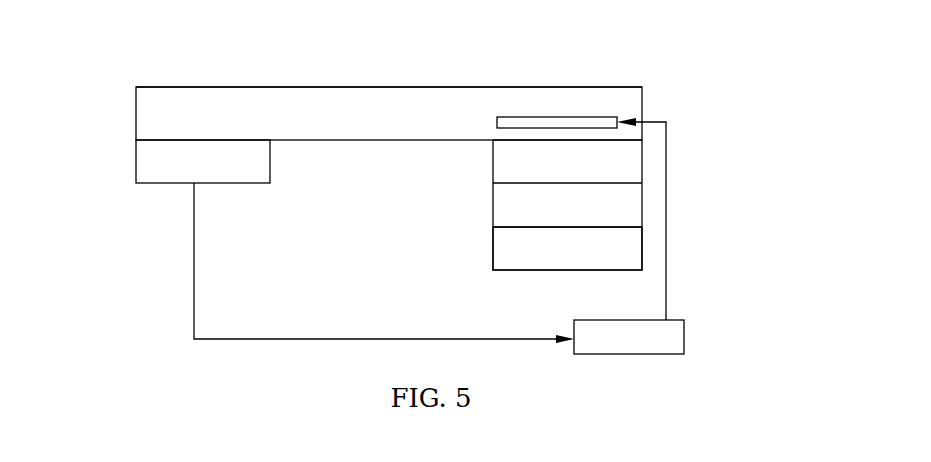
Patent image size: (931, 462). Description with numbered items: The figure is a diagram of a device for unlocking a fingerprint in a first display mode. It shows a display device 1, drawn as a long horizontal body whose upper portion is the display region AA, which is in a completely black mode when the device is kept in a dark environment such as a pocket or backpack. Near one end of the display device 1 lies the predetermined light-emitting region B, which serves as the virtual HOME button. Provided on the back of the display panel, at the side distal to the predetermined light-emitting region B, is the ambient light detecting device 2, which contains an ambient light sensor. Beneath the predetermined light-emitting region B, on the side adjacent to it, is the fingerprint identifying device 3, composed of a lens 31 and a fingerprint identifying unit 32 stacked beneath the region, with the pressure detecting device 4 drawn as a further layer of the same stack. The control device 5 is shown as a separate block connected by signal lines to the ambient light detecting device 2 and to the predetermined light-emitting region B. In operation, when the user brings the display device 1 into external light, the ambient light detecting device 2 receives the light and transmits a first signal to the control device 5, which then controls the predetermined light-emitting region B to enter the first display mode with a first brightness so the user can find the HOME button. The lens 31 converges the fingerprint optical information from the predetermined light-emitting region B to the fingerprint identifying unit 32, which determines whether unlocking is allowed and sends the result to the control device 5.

The display device 1 is at (136, 110).
The ambient light detecting device 2 is at (136, 168).
The display region AA is at (243, 87).
The predetermined light-emitting region B is at (575, 117).
The fingerprint identifying device 3 is at (648, 205).
The lens 31 is at (618, 173).
The fingerprint identifying unit 32 is at (618, 213).
The pressure detecting device 4 is at (618, 267).
The control device 5 is at (667, 342).